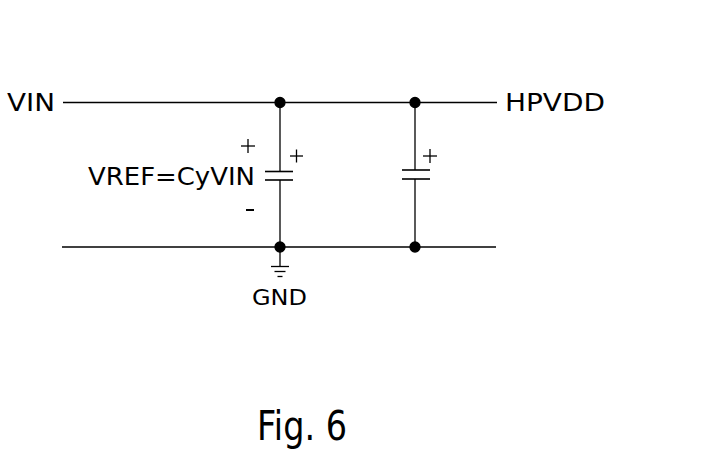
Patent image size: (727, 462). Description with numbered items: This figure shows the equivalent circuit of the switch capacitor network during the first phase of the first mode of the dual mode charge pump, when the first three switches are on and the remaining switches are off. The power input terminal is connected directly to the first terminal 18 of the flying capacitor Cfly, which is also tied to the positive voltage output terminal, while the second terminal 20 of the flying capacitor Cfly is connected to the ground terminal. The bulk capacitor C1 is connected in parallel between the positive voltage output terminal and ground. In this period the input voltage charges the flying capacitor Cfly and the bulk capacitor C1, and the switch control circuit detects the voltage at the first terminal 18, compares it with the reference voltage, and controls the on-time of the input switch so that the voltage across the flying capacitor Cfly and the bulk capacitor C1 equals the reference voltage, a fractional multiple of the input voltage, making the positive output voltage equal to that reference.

The first terminal of the flying capacitor 18 is at (280, 98).
The second terminal of the flying capacitor 20 is at (275, 248).
The flying capacitor Cfly is at (308, 175).
The bulk capacitor C1 is at (434, 175).